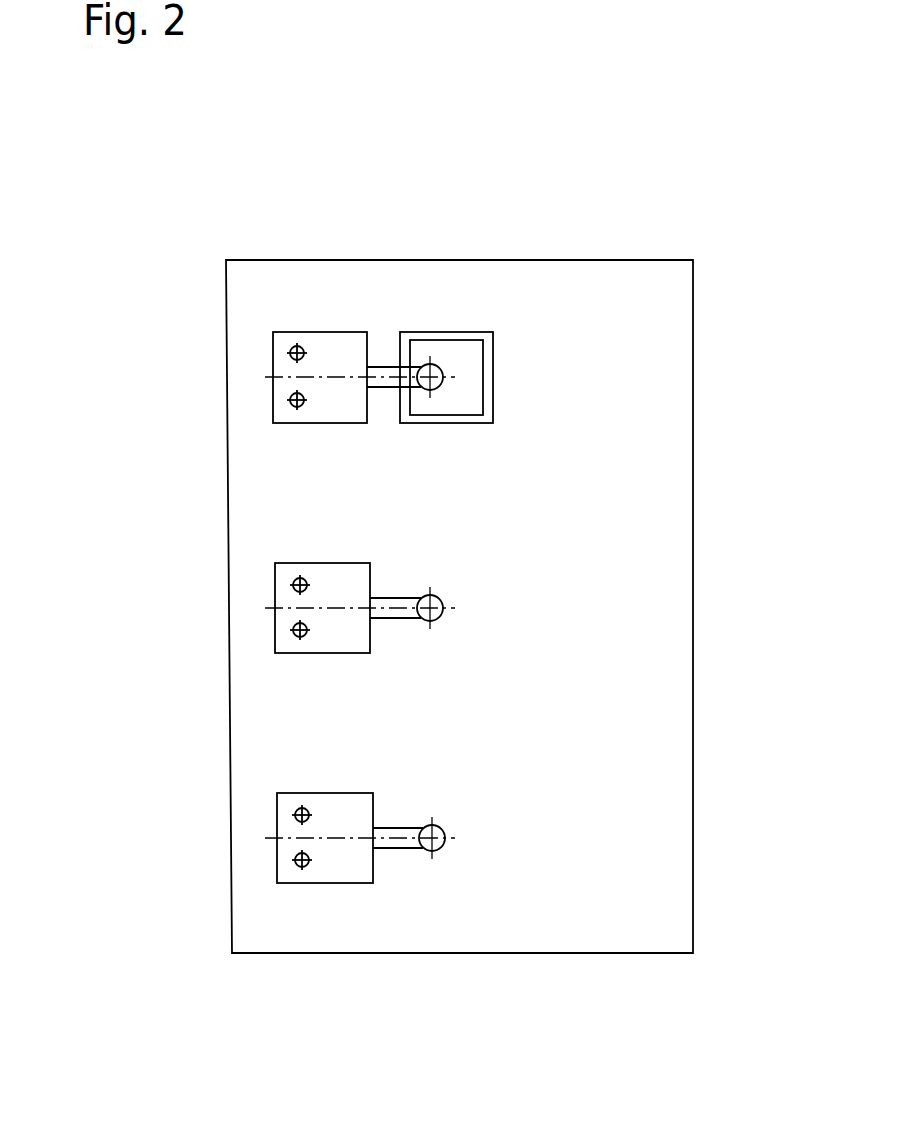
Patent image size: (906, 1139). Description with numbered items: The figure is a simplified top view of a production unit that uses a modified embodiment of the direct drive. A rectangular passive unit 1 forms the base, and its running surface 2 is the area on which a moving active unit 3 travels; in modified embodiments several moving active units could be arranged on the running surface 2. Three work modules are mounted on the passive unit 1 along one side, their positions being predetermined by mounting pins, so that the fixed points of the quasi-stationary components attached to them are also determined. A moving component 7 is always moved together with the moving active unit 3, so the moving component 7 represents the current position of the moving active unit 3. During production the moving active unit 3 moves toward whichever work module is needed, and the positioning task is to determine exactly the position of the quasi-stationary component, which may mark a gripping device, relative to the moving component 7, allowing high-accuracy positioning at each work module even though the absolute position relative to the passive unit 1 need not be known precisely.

The passive unit 1 is at (693, 688).
The running surface 2 is at (622, 484).
The moving active unit 3 is at (489, 331).
The moving component 7 is at (473, 380).